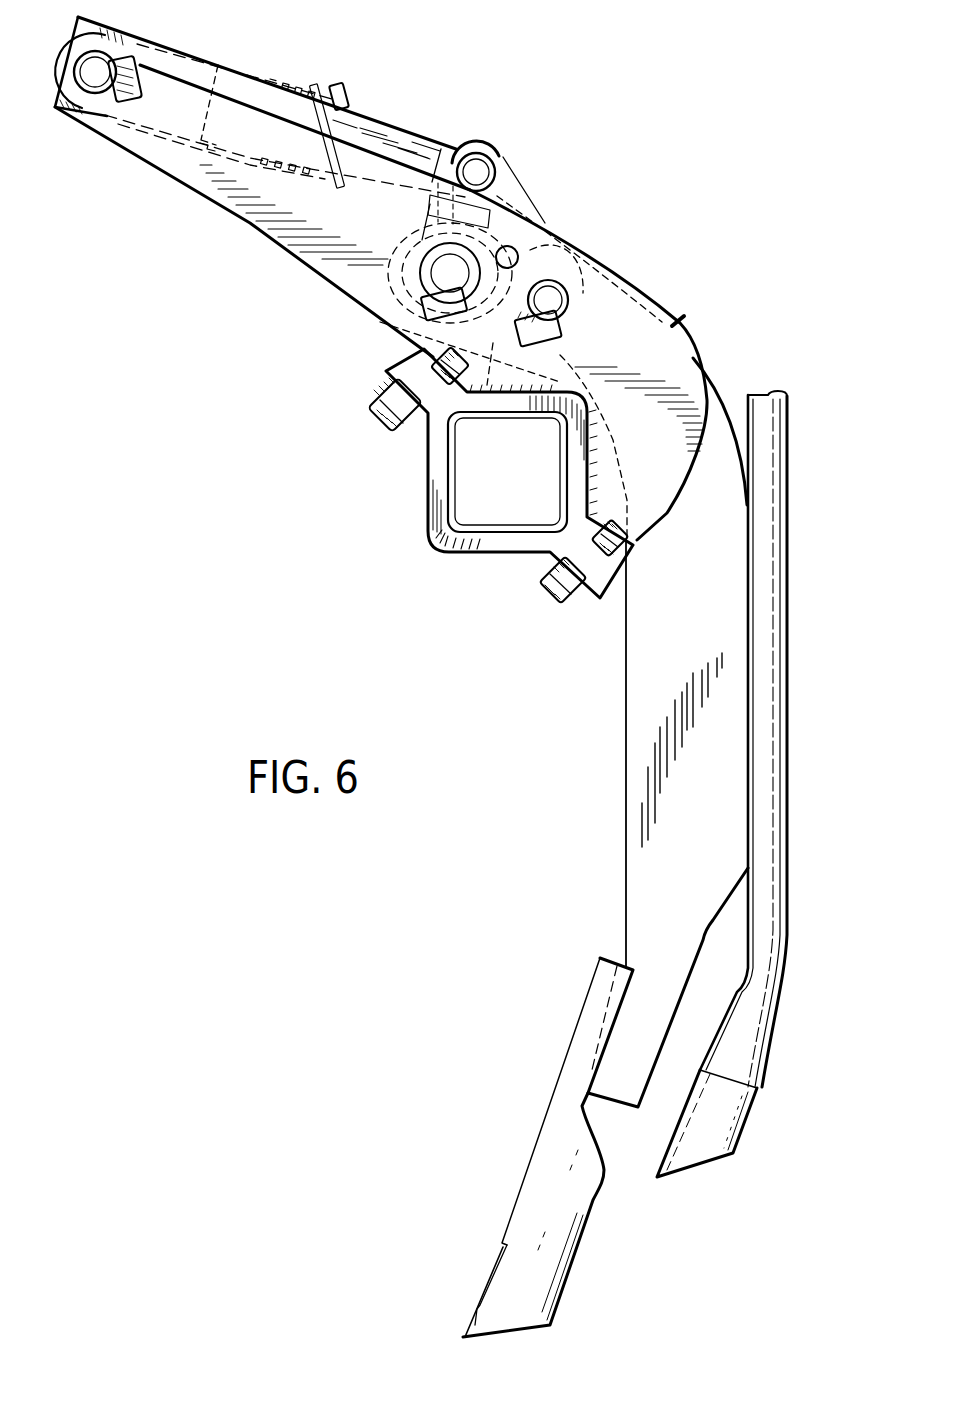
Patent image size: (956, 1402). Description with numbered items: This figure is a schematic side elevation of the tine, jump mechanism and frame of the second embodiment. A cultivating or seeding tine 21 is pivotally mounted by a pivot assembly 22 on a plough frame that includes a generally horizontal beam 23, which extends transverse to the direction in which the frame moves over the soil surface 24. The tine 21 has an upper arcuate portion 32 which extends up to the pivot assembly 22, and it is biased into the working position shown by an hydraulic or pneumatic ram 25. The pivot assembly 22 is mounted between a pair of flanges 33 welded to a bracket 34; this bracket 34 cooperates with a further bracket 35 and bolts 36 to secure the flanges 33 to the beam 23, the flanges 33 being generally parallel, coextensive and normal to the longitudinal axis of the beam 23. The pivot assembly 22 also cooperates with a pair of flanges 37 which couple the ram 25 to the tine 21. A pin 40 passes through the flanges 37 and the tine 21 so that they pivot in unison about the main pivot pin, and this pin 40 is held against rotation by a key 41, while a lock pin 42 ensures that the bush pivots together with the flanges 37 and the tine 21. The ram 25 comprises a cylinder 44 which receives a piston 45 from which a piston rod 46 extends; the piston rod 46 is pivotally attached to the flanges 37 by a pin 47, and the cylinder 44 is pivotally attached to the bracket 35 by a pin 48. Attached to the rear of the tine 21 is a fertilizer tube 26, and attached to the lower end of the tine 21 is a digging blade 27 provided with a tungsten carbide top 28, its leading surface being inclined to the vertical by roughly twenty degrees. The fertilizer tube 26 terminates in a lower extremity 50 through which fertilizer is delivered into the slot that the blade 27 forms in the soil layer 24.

The cultivating or seeding tine 21 is at (627, 777).
The pivot assembly 22 is at (528, 162).
The beam 23 is at (480, 532).
The soil surface 24 is at (677, 1233).
The hydraulic or pneumatic ram 25 is at (360, 74).
The fertilizer tube 26 is at (779, 415).
The digging blade 27 is at (548, 1128).
The tungsten carbide top 28 is at (470, 1324).
The upper arcuate portion 32 is at (688, 315).
The flanges 33 is at (342, 275).
The bracket 34 is at (428, 438).
The further bracket 35 is at (440, 550).
The bolts 36 is at (422, 368).
The flanges 37 is at (521, 186).
The pin 40 is at (557, 293).
The key 41 is at (561, 334).
The lock pin 42 is at (519, 256).
The cylinder 44 is at (332, 92).
The piston 45 is at (258, 155).
The piston rod 46 is at (388, 172).
The pin 47 is at (488, 170).
The pin 48 is at (86, 113).
The lower extremity 50 is at (740, 1128).